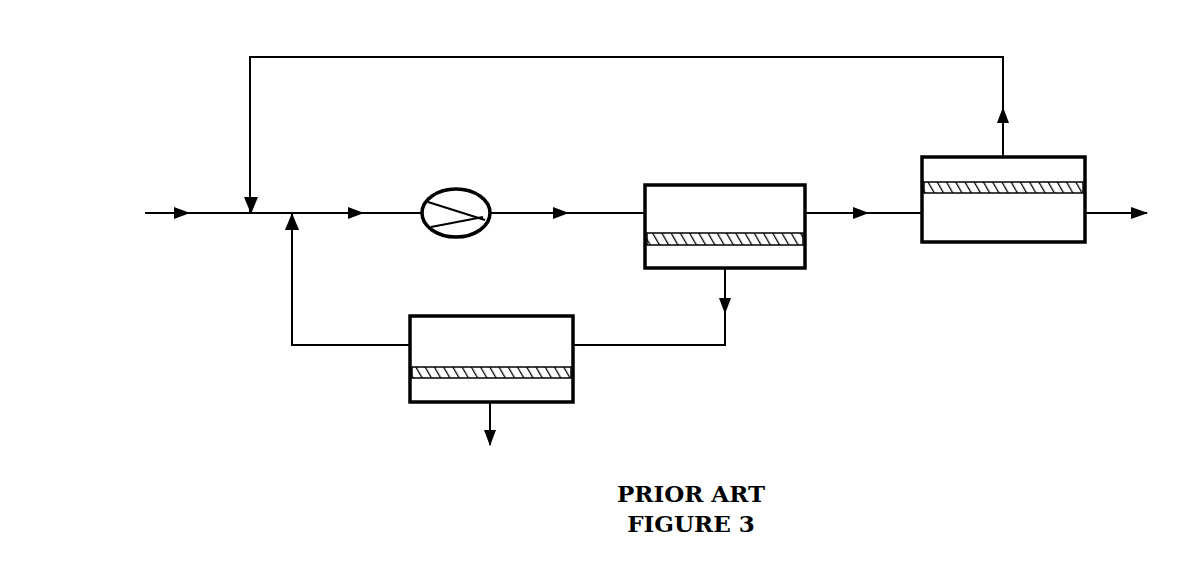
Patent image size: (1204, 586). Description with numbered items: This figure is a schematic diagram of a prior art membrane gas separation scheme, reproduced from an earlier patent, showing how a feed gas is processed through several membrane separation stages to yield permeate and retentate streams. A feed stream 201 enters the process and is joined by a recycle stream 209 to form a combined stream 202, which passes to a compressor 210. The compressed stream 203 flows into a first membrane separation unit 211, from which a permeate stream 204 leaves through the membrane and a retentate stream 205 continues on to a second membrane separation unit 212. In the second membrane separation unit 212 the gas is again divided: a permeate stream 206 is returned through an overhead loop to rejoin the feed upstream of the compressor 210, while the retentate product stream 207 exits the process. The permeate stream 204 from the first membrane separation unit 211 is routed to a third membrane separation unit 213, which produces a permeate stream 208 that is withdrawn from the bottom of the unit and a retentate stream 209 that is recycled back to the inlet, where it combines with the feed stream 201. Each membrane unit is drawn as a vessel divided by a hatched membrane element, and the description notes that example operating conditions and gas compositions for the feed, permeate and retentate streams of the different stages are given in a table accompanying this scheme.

The feed gas stream 201 is at (197, 202).
The combined feed stream 202 is at (336, 202).
The compressed stream 203 is at (567, 201).
The first permeate stream 204 is at (652, 306).
The first residue stream 205 is at (863, 201).
The second permeate recycle stream 206 is at (654, 135).
The second residue product stream 207 is at (1142, 214).
The third permeate stream 208 is at (488, 437).
The third residue recycle stream 209 is at (347, 280).
The compressor 210 is at (455, 189).
The first membrane separation unit 211 is at (683, 185).
The second membrane separation unit 212 is at (980, 242).
The third membrane separation unit 213 is at (480, 316).